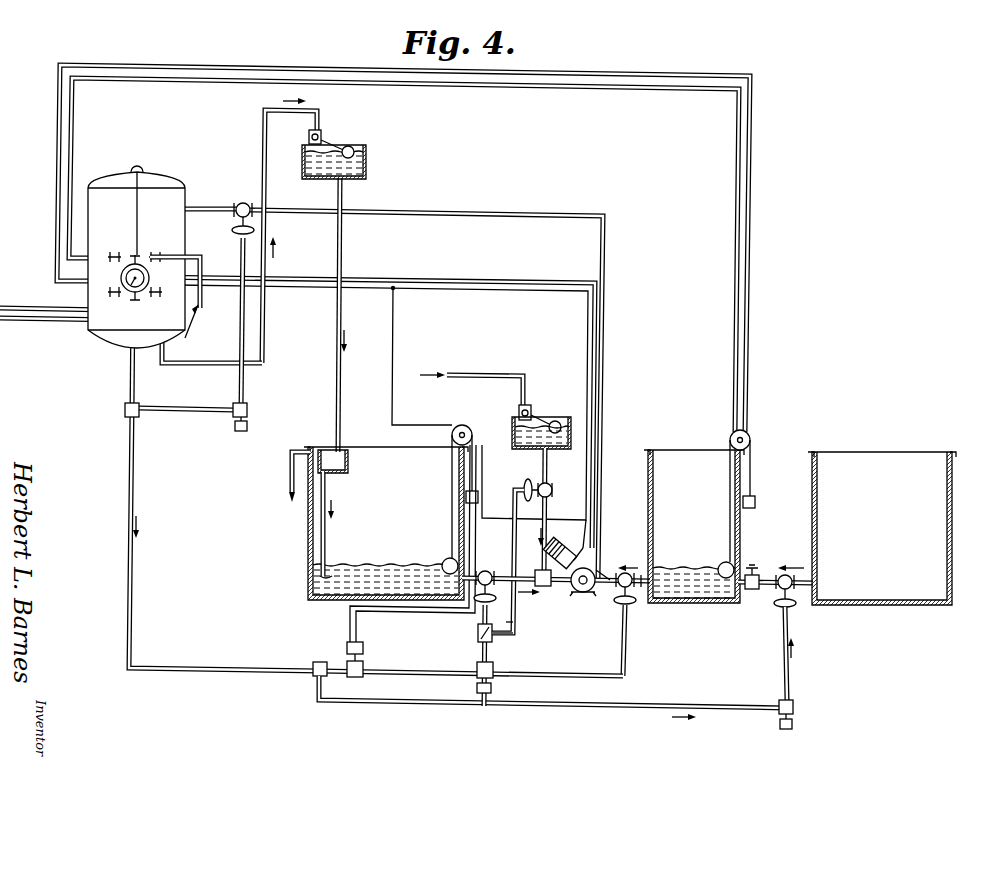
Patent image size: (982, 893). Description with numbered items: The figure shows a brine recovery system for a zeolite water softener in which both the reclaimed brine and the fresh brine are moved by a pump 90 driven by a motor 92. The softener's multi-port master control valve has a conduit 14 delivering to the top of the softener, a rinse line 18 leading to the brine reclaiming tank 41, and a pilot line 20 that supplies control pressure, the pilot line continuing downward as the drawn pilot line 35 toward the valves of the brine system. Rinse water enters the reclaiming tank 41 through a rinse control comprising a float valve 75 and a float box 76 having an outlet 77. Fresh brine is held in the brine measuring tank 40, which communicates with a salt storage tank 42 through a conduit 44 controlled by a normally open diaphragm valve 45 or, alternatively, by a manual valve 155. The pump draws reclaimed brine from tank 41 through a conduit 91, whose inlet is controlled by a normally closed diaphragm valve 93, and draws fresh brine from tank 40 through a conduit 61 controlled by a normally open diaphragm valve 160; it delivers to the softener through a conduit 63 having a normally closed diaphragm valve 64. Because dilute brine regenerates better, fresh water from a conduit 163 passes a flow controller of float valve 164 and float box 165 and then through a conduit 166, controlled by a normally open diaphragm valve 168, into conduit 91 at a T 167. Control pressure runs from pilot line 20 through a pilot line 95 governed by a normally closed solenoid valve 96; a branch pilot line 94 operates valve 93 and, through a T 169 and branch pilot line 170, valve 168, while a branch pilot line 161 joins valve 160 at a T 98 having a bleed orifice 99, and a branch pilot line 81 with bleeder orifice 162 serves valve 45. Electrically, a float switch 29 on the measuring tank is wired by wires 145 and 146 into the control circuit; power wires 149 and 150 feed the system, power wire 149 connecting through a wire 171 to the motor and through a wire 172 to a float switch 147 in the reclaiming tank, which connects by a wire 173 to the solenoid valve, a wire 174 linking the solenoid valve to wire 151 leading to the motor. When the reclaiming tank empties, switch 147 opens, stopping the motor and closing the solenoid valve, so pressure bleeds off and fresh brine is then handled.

The conduit 14 is at (142, 178).
The rinse line 18 is at (264, 150).
The pilot line 20 is at (128, 362).
The float switch 29 is at (752, 437).
The pilot line pipe 35 is at (127, 438).
The brine measuring tank 40 is at (654, 450).
The brine reclaiming tank 41 is at (285, 503).
The salt storage tank 42 is at (893, 456).
The conduit 44 is at (812, 590).
The normally open diaphragm valve 45 is at (780, 594).
The conduit 61 is at (645, 586).
The conduit 63 is at (607, 256).
The normally closed diaphragm valve 64 is at (240, 204).
The float valve 75 is at (324, 132).
The float box 76 is at (368, 160).
The outlet 77 is at (344, 200).
The branch pilot line 81 is at (606, 712).
The pump 90 is at (612, 590).
The conduit 91 is at (540, 572).
The motor 92 is at (580, 548).
The normally closed diaphragm valve 93 is at (487, 570).
The branch pilot line 94 is at (477, 634).
The pilot line 95 is at (410, 660).
The normally closed solenoid valve 96 is at (330, 674).
The T 98 is at (492, 666).
The bleed orifice 99 is at (498, 688).
The wire 145 is at (210, 67).
The wire 146 is at (212, 82).
The float switch 147 is at (470, 426).
The power wire 149 is at (45, 323).
The power wire 150 is at (40, 312).
The wire 151 is at (290, 278).
The valve 155 is at (754, 568).
The normally open diaphragm valve 160 is at (623, 572).
The branch pilot line 161 is at (598, 642).
The bleeder orifice 162 is at (796, 727).
The conduit 163 is at (528, 383).
The float valve 164 is at (540, 416).
The float box 165 is at (574, 432).
The conduit 166 is at (540, 459).
The T 167 is at (547, 588).
The normally open diaphragm valve 168 is at (536, 482).
The T 169 is at (490, 643).
The branch pilot line 170 is at (514, 624).
The wire 171 is at (484, 292).
The wire 172 is at (395, 352).
The wire 173 is at (398, 622).
The wire 174 is at (342, 665).